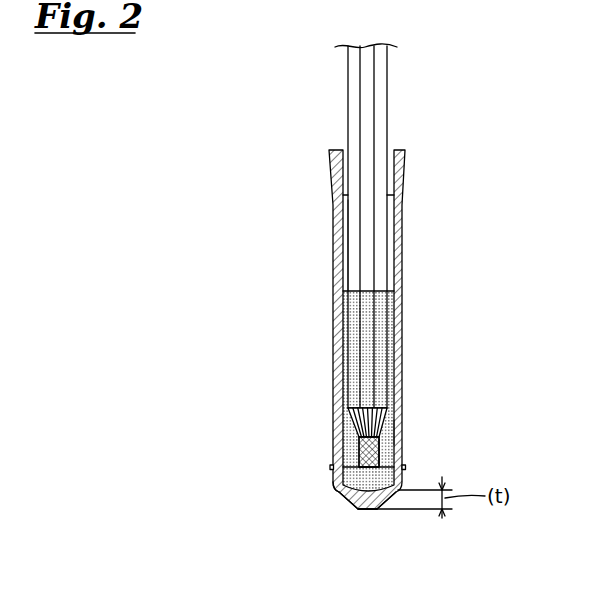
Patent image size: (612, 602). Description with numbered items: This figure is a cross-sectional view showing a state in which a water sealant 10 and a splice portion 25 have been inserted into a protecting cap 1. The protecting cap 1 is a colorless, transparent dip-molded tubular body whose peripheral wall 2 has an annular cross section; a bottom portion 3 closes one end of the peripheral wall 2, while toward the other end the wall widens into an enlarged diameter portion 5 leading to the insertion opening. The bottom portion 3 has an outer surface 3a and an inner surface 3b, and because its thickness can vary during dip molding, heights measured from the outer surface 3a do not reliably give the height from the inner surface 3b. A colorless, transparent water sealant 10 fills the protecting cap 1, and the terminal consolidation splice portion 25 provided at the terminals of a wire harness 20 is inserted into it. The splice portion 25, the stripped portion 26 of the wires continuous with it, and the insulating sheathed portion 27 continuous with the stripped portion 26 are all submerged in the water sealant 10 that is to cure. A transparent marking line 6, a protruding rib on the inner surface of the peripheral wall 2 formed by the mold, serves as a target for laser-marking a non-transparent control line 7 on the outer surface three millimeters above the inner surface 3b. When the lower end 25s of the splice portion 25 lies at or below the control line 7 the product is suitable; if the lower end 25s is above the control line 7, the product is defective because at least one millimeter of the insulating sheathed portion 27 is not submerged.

The protecting cap 1 is at (407, 264).
The peripheral wall 2 is at (405, 347).
The bottom portion 3 is at (395, 497).
The outer surface of the bottom portion 3a is at (366, 510).
The inner surface of the bottom portion 3b is at (340, 497).
The enlarged diameter portion 5 is at (404, 174).
The marking line 6 is at (385, 448).
The control line 7 is at (407, 466).
The water sealant 10 is at (357, 447).
The wire harness 20 is at (392, 101).
The splice portion 25 is at (396, 432).
The lower end of the splice portion 25s is at (333, 470).
The stripped portion 26 is at (357, 418).
The insulating sheathed portion 27 is at (353, 242).